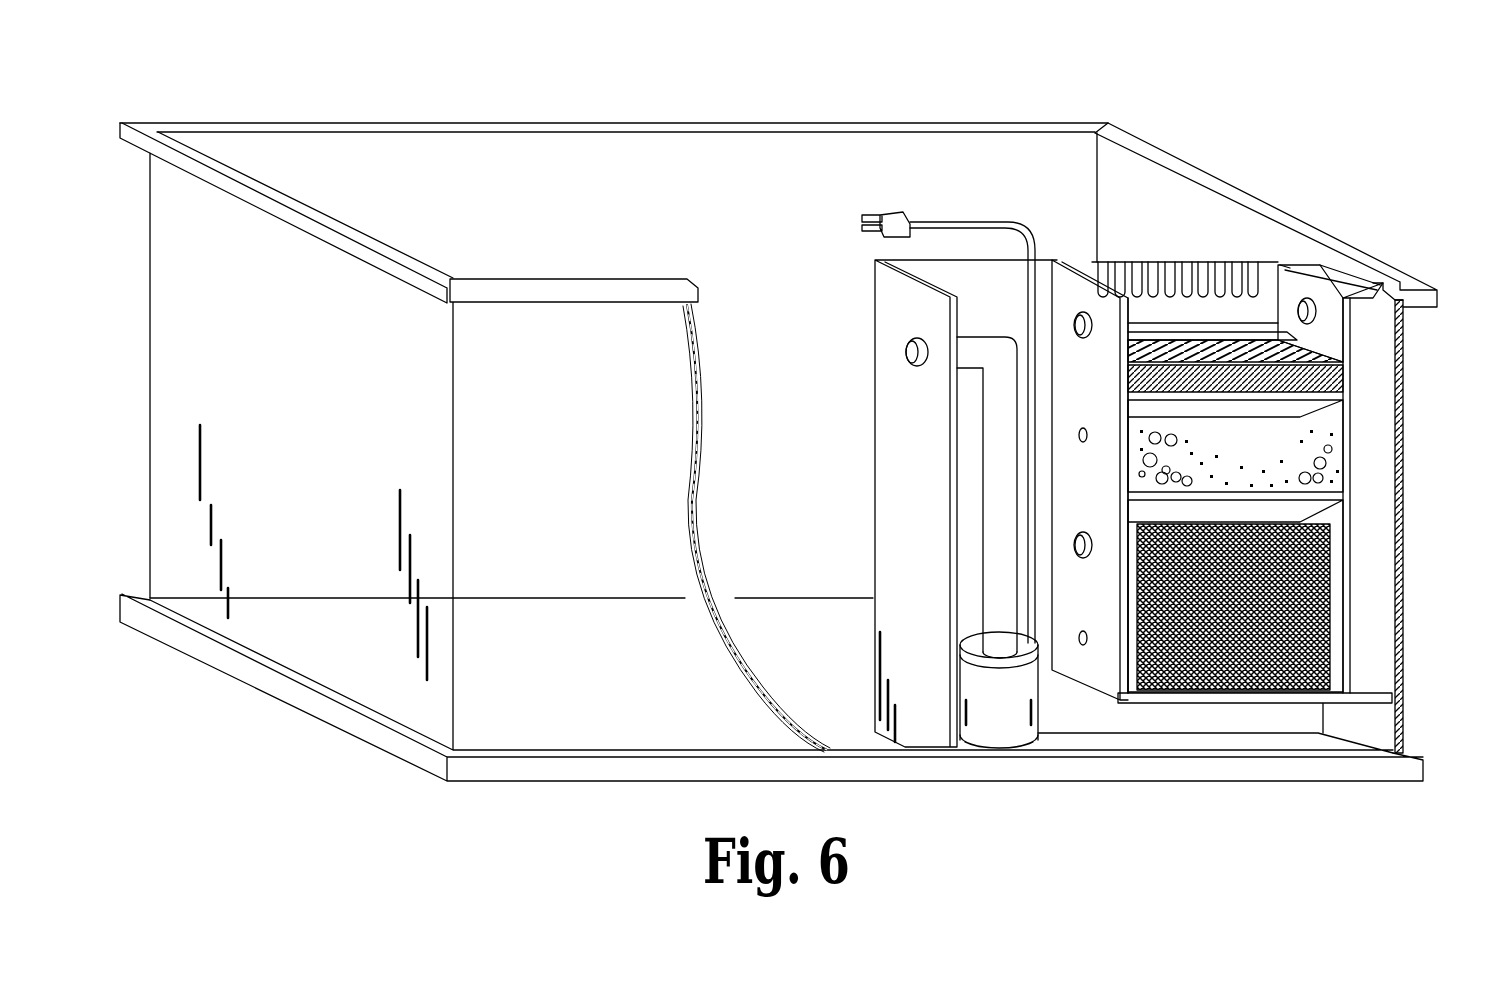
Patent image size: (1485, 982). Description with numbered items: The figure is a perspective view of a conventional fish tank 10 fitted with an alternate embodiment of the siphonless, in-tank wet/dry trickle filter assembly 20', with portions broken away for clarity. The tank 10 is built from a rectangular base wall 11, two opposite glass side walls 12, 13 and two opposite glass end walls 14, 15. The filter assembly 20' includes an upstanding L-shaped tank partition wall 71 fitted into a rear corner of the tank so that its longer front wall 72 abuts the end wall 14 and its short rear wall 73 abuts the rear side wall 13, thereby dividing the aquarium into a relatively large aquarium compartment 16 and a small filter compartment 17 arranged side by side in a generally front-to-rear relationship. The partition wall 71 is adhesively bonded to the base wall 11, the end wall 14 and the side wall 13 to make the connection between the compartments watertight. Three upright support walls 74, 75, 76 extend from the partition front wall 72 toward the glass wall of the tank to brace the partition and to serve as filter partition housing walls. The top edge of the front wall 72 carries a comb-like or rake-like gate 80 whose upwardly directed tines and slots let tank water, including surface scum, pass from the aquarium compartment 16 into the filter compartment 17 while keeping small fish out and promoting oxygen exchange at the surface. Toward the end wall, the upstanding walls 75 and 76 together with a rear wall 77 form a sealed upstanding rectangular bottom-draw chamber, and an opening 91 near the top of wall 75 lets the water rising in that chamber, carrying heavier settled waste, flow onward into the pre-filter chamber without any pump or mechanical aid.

The fish tank 10 is at (1008, 797).
The base wall 11 is at (848, 735).
The glass side wall 12 is at (595, 160).
The glass side wall 13 is at (673, 455).
The glass end wall 14 is at (1255, 223).
The glass end wall 15 is at (175, 375).
The aquarium compartment 16 is at (390, 160).
The filter compartment 17 is at (1197, 323).
The filter assembly 20' is at (912, 400).
The tank partition wall 71 is at (870, 305).
The front wall 72 is at (980, 278).
The rear wall 73 is at (893, 400).
The support wall 74 is at (1063, 282).
The support wall 75 is at (1285, 287).
The support wall 76 is at (1338, 282).
The rear wall 77 is at (1372, 442).
The gate 80 is at (1117, 258).
The opening 91 is at (1318, 318).